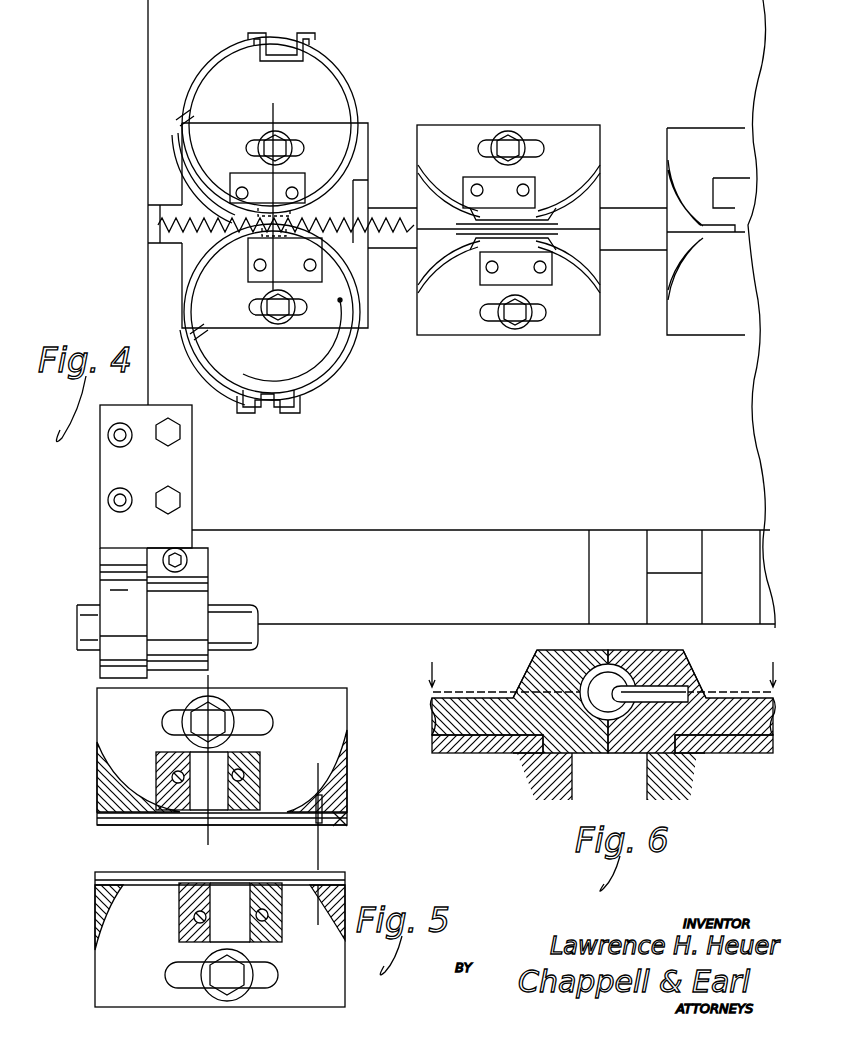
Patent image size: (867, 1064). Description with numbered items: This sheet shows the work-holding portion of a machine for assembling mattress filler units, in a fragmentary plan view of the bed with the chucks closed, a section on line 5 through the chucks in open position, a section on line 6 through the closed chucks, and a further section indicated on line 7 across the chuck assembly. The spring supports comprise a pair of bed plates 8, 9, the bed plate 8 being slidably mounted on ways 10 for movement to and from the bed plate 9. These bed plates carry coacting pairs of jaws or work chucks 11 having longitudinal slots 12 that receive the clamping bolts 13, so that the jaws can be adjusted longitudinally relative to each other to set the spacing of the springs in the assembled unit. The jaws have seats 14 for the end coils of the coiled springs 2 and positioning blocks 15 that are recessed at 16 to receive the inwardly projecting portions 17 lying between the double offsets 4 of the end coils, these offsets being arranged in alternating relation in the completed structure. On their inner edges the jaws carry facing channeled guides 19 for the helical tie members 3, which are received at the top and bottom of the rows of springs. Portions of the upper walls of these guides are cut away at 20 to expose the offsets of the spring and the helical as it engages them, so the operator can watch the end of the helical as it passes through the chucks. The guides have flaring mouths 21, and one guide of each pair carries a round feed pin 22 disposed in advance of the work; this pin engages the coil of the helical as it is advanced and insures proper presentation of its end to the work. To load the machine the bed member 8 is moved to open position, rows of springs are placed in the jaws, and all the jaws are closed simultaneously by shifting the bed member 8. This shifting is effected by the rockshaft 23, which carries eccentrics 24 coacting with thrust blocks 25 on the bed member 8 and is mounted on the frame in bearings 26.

In FIG. 4, the coiled springs 2 is at (338, 70).
In FIG. 4, the helical tie members 3 is at (396, 224).
In FIG. 6, the helical tie members 3 is at (625, 674).
In FIG. 4, the double offsets 4 is at (304, 35).
In FIG. 6, the section line 5— 5 is at (600, 665).
In FIG. 4, the section line 6— 6 is at (364, 186).
In FIG. 5, the section line 6— 6 is at (318, 763).
In FIG. 4, the section line 7 is at (265, 106).
In FIG. 5, the section line 7 is at (200, 683).
In FIG. 4, the bed plate 8 is at (415, 528).
In FIG. 6, the bed plate 8 is at (688, 775).
In FIG. 6, the bed plate 9 is at (540, 775).
In FIG. 4, the ways 10 is at (602, 575).
In FIG. 4, the jaws or work chucks 11 is at (579, 137).
In FIG. 5, the jaws or work chucks 11 is at (343, 733).
In FIG. 6, the jaws or work chucks 11 is at (487, 700).
In FIG. 4, the longitudinal slots 12 is at (536, 150).
In FIG. 5, the longitudinal slots 12 is at (195, 988).
In FIG. 4, the clamping bolts 13 is at (508, 145).
In FIG. 5, the clamping bolts 13 is at (245, 990).
In FIG. 4, the seats 14 is at (583, 198).
In FIG. 5, the seats 14 is at (310, 783).
In FIG. 6, the seats 14 is at (462, 700).
In FIG. 4, the positioning blocks 15 is at (533, 184).
In FIG. 5, the positioning blocks 15 is at (262, 795).
In FIG. 5, the recess 16 is at (225, 806).
In FIG. 4, the inwardly projecting portions 17 is at (285, 56).
In FIG. 5, the channeled guides 19 is at (115, 822).
In FIG. 6, the channeled guides 19 is at (583, 665).
In FIG. 4, the cut-away portions 20 is at (537, 228).
In FIG. 5, the flaring mouths 21 is at (335, 815).
In FIG. 5, the feed pin 22 is at (322, 826).
In FIG. 6, the feed pin 22 is at (652, 705).
In FIG. 4, the rockshaft 23 is at (250, 618).
In FIG. 4, the eccentrics 24 is at (108, 593).
In FIG. 4, the thrust blocks 25 is at (108, 553).
In FIG. 4, the bearings 26 is at (210, 602).